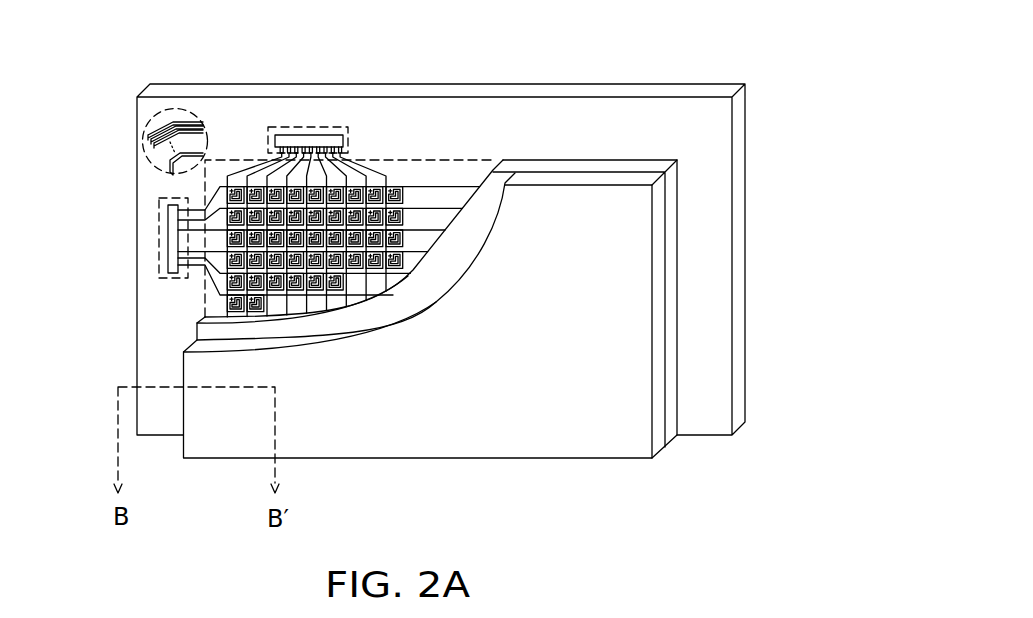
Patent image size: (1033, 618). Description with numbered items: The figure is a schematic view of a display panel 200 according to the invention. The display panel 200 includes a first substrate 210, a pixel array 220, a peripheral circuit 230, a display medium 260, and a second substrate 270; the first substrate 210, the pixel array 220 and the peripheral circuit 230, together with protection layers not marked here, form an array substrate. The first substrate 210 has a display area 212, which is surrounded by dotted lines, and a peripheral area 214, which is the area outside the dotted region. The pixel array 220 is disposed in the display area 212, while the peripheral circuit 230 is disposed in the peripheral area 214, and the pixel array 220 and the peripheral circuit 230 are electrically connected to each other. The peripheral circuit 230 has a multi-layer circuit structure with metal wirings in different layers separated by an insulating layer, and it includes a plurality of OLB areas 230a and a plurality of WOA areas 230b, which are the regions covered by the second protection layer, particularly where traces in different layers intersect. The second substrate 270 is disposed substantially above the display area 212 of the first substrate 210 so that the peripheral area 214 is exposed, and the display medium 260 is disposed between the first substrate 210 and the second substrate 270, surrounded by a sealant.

The display panel 200 is at (742, 510).
The first substrate 210 is at (685, 90).
The display area 212 is at (462, 158).
The peripheral area 214 is at (555, 122).
The pixel array 220 is at (388, 185).
The peripheral circuit 230 is at (70, 173).
The OLB areas 230a is at (308, 125).
The WOA areas 230b is at (155, 170).
The display medium 260 is at (672, 333).
The second substrate 270 is at (658, 382).